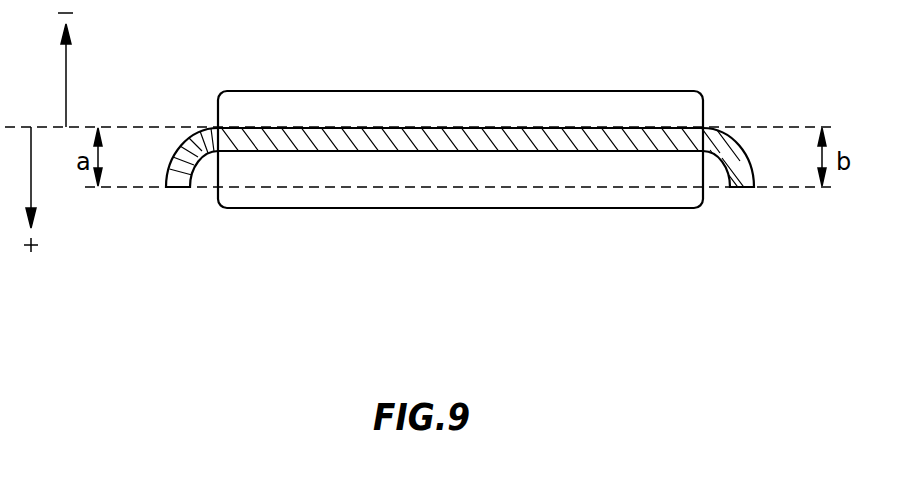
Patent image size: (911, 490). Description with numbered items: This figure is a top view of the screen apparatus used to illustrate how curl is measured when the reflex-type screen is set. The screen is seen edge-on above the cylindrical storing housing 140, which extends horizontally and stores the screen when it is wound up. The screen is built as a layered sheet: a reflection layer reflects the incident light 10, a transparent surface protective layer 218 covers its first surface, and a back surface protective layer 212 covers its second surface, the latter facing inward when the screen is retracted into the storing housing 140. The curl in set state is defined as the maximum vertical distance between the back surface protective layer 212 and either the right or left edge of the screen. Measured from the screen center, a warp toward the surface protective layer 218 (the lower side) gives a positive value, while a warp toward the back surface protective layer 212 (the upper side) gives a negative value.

The incident light 10 is at (545, 217).
The storing housing 140 is at (552, 105).
The back surface protective layer 212 is at (348, 128).
The surface protective layer 218 is at (276, 152).